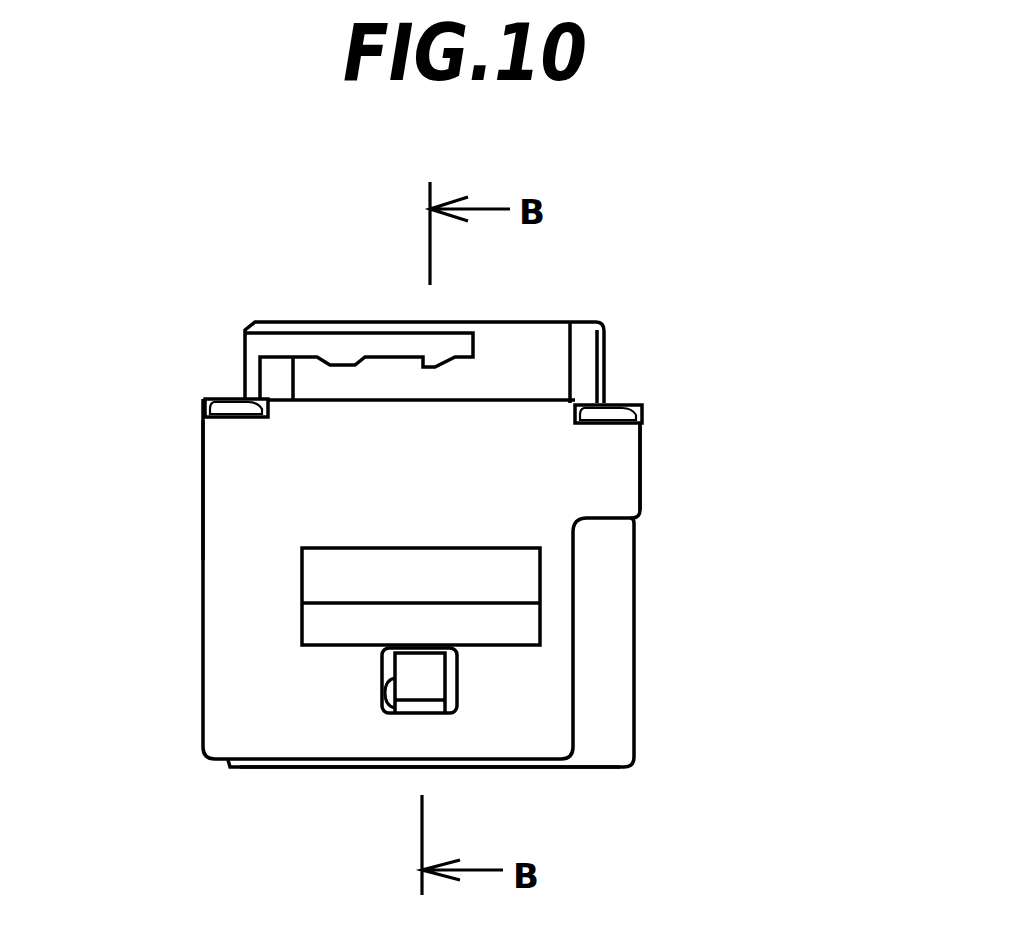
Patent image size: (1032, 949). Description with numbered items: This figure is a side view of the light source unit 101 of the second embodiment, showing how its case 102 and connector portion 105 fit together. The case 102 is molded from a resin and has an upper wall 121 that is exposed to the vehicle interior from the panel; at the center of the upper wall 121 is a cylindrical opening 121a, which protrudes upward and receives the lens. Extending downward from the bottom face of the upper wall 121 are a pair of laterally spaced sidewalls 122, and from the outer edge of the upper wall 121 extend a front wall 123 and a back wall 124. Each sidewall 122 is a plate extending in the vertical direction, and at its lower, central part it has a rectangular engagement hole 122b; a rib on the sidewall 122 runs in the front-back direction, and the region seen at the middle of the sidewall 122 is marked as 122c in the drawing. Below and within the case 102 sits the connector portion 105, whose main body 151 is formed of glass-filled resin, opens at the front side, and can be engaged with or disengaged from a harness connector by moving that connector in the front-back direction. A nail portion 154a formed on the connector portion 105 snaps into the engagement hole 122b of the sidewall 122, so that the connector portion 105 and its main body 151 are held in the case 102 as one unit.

The light source unit 101 is at (785, 239).
The case 102 is at (235, 426).
The connector portion 105 is at (613, 753).
The upper wall 121 is at (330, 343).
The opening 121a is at (540, 370).
The sidewall 122 is at (257, 705).
The engagement hole 122b is at (403, 690).
The opening 122c is at (337, 572).
The front wall 123 is at (607, 462).
The back wall 124 is at (203, 482).
The main body 151 is at (603, 630).
The nail portion 154a is at (423, 690).